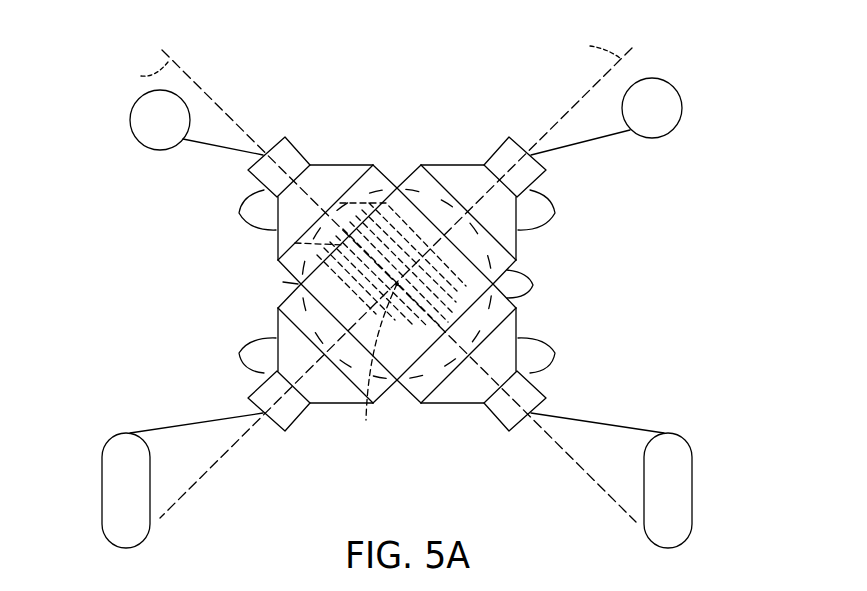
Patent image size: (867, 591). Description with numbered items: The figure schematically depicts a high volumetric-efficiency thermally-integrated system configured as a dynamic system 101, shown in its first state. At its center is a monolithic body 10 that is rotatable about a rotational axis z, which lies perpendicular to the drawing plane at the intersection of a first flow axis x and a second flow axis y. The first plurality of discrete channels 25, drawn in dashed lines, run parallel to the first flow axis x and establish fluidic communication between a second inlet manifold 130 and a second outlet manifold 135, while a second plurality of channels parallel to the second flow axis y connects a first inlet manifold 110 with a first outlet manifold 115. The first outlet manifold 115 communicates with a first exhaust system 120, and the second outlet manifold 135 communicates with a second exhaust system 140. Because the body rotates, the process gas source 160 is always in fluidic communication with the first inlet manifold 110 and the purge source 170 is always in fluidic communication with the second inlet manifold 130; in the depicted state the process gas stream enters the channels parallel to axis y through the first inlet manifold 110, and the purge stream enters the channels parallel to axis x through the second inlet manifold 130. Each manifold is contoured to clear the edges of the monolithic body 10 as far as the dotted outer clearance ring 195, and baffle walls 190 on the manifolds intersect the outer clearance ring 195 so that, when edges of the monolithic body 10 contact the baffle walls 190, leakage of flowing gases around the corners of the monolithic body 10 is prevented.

The dynamic system 101 is at (93, 67).
The monolithic body 10 is at (400, 185).
The first plurality of discrete channels 25 is at (295, 243).
The second exhaust system 140 is at (132, 131).
The first exhaust system 120 is at (678, 123).
The process gas source 160 is at (102, 487).
The purge source 170 is at (692, 487).
The second outlet manifold 135 is at (239, 213).
The first outlet manifold 115 is at (555, 213).
The first inlet manifold 110 is at (239, 353).
The second inlet manifold 130 is at (555, 353).
The baffle walls 190 is at (533, 285).
The outer clearance ring 195 is at (283, 282).